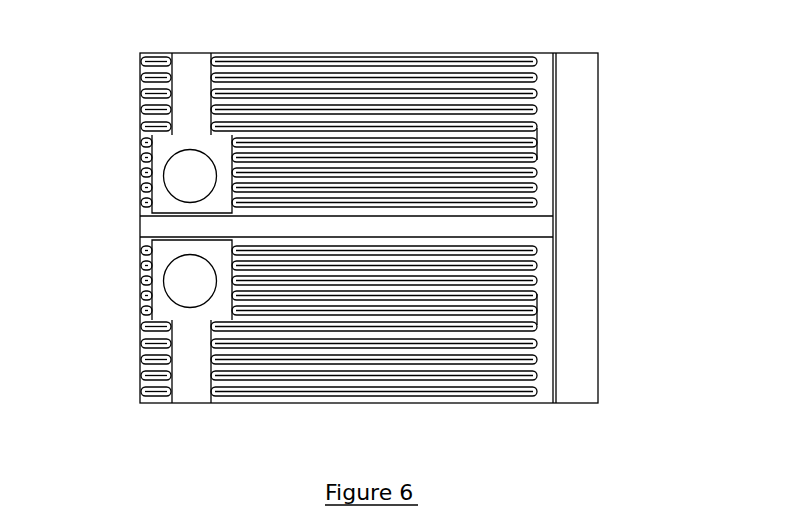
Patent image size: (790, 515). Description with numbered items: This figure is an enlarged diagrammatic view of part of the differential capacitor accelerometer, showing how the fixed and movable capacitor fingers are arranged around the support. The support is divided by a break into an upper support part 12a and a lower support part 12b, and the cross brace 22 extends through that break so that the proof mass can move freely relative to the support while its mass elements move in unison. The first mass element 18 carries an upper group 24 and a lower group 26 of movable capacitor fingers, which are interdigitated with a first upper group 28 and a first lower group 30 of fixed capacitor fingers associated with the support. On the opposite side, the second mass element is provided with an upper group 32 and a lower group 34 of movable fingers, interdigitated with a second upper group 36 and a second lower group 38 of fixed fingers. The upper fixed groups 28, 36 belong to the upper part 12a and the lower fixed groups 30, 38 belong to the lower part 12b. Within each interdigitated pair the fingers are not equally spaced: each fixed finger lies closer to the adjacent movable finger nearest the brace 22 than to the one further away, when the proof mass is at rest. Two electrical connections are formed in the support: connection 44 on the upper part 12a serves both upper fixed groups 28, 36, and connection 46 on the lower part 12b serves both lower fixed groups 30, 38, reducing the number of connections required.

The upper support part 12a is at (190, 80).
The lower support part 12b is at (191, 378).
The first mass element 18 is at (560, 197).
The cross brace 22 is at (515, 226).
The upper group of movable capacitor fingers 24 is at (525, 157).
The lower group of movable capacitor fingers 26 is at (525, 320).
The first upper group of fixed capacitor fingers 28 is at (375, 88).
The first lower group of fixed capacitor fingers 30 is at (375, 375).
The upper group of movable capacitor fingers 32 is at (148, 107).
The lower group of movable capacitor fingers 34 is at (150, 334).
The second upper group of fixed capacitor fingers 36 is at (150, 160).
The second lower group of fixed capacitor fingers 38 is at (150, 396).
The electrical connection 44 is at (188, 182).
The electrical connection 46 is at (188, 276).